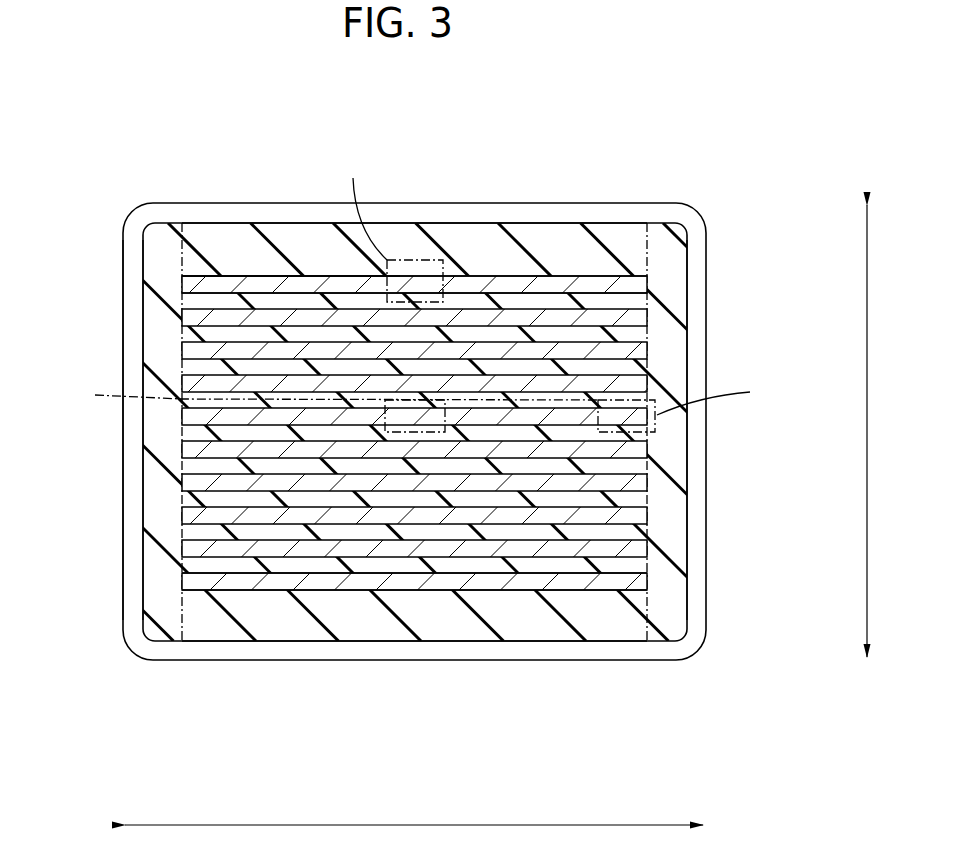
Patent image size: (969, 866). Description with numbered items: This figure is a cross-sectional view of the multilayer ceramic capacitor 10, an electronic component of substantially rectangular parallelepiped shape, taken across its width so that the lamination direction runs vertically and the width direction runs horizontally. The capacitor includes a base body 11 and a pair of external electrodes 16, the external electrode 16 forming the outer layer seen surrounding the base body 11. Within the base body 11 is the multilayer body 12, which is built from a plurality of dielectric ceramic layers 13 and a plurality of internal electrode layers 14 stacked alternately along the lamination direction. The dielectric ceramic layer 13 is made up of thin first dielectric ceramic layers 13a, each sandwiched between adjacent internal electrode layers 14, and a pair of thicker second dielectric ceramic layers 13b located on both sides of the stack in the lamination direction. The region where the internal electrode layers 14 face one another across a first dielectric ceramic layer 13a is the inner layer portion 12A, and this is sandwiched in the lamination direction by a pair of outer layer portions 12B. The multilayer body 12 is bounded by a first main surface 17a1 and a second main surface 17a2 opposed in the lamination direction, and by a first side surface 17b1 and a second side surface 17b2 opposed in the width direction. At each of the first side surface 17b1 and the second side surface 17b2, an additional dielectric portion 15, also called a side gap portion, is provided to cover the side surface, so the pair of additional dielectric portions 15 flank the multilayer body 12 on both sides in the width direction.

The multilayer ceramic capacitor 10 is at (688, 157).
The base body 11 is at (581, 209).
The multilayer body 12 is at (505, 162).
The inner layer portion 12A is at (242, 272).
The outer layer portion 12B is at (521, 217).
The dielectric ceramic layer 13 is at (408, 246).
The first dielectric ceramic layer 13a is at (208, 328).
The second dielectric ceramic layer 13b is at (290, 245).
The internal electrode layer 14 is at (487, 290).
The additional dielectric portion 15 is at (158, 437).
The external electrode 16 is at (133, 530).
The first main surface 17a1 is at (313, 223).
The second main surface 17a2 is at (400, 641).
The first side surface 17b1 is at (182, 495).
The second side surface 17b2 is at (647, 335).